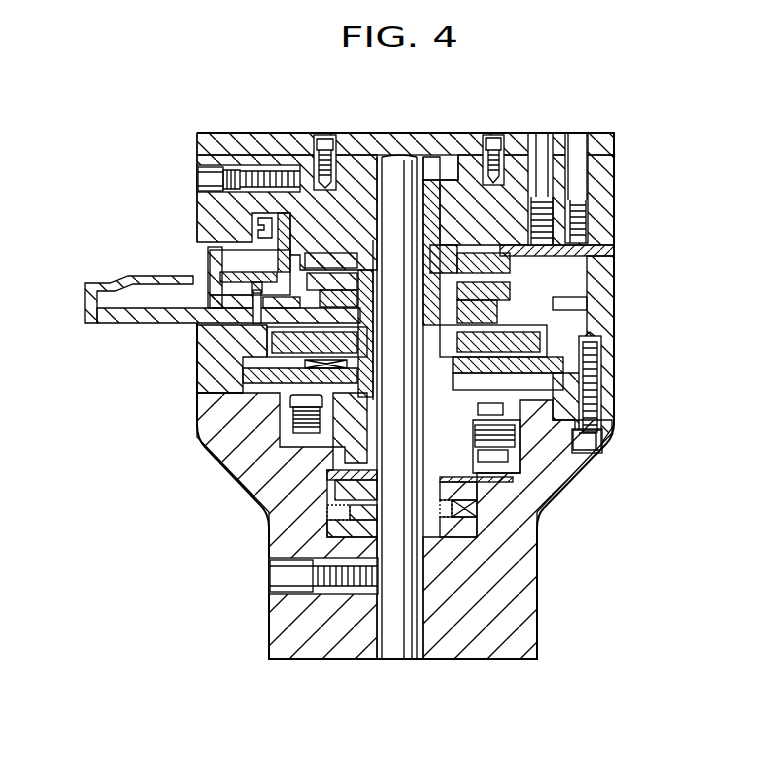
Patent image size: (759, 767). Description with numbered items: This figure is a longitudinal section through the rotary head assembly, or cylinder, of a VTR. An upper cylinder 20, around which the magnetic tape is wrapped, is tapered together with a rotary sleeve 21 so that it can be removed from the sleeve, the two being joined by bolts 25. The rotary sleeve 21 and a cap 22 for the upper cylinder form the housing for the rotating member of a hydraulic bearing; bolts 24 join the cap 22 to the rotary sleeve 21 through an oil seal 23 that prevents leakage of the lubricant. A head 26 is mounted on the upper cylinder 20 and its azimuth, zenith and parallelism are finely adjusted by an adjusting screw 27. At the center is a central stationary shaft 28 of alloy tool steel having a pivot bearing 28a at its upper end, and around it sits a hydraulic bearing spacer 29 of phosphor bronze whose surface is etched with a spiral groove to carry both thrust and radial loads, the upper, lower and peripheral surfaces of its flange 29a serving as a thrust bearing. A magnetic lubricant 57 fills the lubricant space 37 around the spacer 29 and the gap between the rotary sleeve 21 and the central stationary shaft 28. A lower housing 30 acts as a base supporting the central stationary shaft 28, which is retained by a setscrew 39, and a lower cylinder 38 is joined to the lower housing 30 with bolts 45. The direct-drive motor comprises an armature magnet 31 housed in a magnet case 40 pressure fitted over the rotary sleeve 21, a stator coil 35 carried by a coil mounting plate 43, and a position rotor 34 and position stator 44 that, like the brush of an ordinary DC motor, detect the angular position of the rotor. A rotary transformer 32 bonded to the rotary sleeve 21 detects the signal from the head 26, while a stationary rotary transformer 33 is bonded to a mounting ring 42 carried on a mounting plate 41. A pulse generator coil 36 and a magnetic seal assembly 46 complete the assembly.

The upper cylinder 20 is at (212, 205).
The rotary sleeve 21 is at (377, 420).
The cap 22 is at (399, 133).
The oil seal 23 is at (326, 176).
The bolts 24 is at (323, 139).
The bolts 25 is at (268, 171).
The head 26 is at (600, 251).
The adjusting screw 27 is at (586, 218).
The central stationary shaft 28 is at (392, 650).
The pivot bearing 28a is at (423, 160).
The hydraulic bearing spacer 29 is at (438, 216).
The flange 29a is at (487, 162).
The lower housing 30 is at (558, 487).
The armature magnet 31 is at (530, 343).
The rotary transformer 32 is at (500, 263).
The rotary transformer 33 is at (495, 284).
The position rotor 34 is at (340, 450).
The stator coil 35 is at (347, 364).
The pulse generator coil 36 is at (257, 302).
The lubricant space 37 is at (441, 243).
The lower cylinder 38 is at (606, 356).
The setscrew 39 is at (344, 590).
The magnet case 40 is at (257, 330).
The mounting plate 41 is at (255, 334).
The mounting ring 42 is at (300, 292).
The coil mounting plate 43 is at (503, 378).
The position stator 44 is at (291, 426).
The bolts 45 is at (596, 408).
The magnetic seal assembly 46 is at (493, 500).
The magnetic lubricant 57 is at (437, 434).